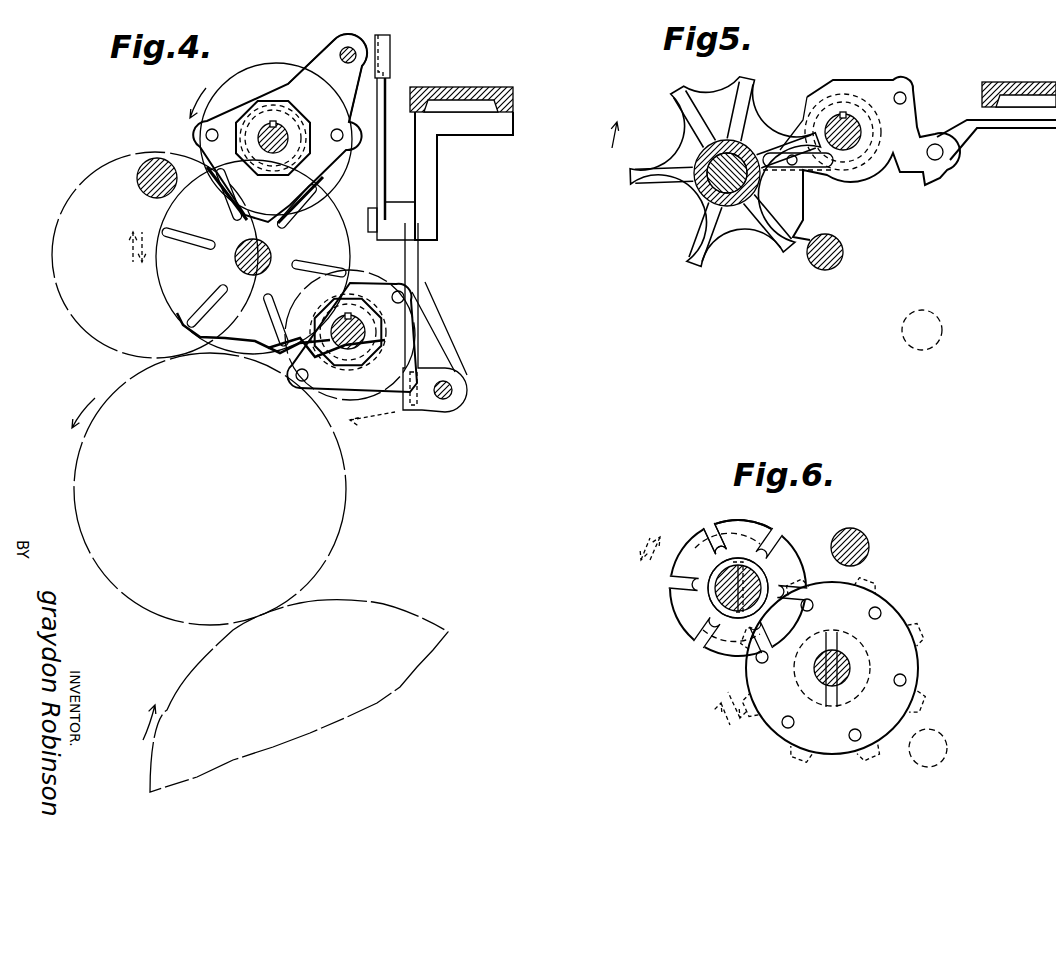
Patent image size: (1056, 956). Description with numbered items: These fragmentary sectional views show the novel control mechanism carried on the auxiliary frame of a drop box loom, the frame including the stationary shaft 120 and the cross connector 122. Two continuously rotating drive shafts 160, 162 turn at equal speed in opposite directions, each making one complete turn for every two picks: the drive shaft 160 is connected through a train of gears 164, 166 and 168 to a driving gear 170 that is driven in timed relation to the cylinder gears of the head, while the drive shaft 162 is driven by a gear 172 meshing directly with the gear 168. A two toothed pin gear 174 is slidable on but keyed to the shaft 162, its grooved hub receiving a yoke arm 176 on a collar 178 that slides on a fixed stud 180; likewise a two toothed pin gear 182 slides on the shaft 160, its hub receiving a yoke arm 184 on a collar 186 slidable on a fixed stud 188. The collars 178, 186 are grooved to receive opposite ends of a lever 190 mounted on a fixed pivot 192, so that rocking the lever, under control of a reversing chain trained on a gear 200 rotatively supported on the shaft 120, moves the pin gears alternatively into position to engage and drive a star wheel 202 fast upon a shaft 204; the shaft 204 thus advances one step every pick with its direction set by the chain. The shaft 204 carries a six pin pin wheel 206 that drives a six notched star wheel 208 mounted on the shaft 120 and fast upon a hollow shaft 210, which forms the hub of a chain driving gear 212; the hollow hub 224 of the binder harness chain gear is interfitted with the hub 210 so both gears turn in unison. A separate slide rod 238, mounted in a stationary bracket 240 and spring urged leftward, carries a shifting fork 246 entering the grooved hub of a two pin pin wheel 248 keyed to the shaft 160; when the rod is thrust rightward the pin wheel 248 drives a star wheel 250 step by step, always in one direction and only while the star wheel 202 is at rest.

In FIG. 4, the stationary shaft 120 is at (148, 182).
In FIG. 5, the stationary shaft 120 is at (738, 205).
In FIG. 6, the stationary shaft 120 is at (722, 600).
In FIG. 4, the cross connector 122 is at (462, 88).
In FIG. 5, the cross connector 122 is at (1030, 82).
In FIG. 4, the drive shaft 160 is at (268, 128).
In FIG. 5, the drive shaft 160 is at (862, 110).
In FIG. 6, the drive shaft 160 is at (853, 535).
In FIG. 4, the drive shaft 162 is at (360, 337).
In FIG. 5, the drive shaft 162 is at (915, 322).
In FIG. 6, the drive shaft 162 is at (937, 740).
In FIG. 4, the gear 164 is at (232, 82).
In FIG. 4, the gear 166 is at (53, 224).
In FIG. 4, the gear 168 is at (77, 458).
In FIG. 4, the driving gear 170 is at (190, 677).
In FIG. 4, the gear 172 is at (372, 415).
In FIG. 4, the pin gear 174 is at (393, 285).
In FIG. 4, the yoke arm 176 is at (428, 402).
In FIG. 4, the collar 178 is at (437, 369).
In FIG. 4, the fixed stud 180 is at (452, 394).
In FIG. 4, the pin gear 182 is at (198, 137).
In FIG. 4, the yoke arm 184 is at (318, 68).
In FIG. 4, the collar 186 is at (370, 38).
In FIG. 4, the fixed stud 188 is at (345, 48).
In FIG. 4, the lever 190 is at (385, 169).
In FIG. 4, the fixed pivot 192 is at (368, 220).
In FIG. 5, the gear 200 is at (722, 148).
In FIG. 4, the star wheel 202 is at (183, 292).
In FIG. 6, the star wheel 202 is at (758, 735).
In FIG. 4, the shaft 204 is at (272, 252).
In FIG. 5, the shaft 204 is at (843, 250).
In FIG. 6, the shaft 204 is at (852, 664).
In FIG. 6, the pin wheel 206 is at (860, 600).
In FIG. 6, the star wheel 208 is at (738, 521).
In FIG. 6, the hollow shaft 210 is at (710, 575).
In FIG. 6, the chain driving gear 212 is at (712, 530).
In FIG. 6, the hollow hub 224 is at (770, 585).
In FIG. 5, the slide rod 238 is at (943, 160).
In FIG. 5, the stationary bracket 240 is at (975, 137).
In FIG. 5, the shifting fork 246 is at (918, 125).
In FIG. 5, the pin wheel 248 is at (800, 103).
In FIG. 5, the star wheel 250 is at (652, 216).